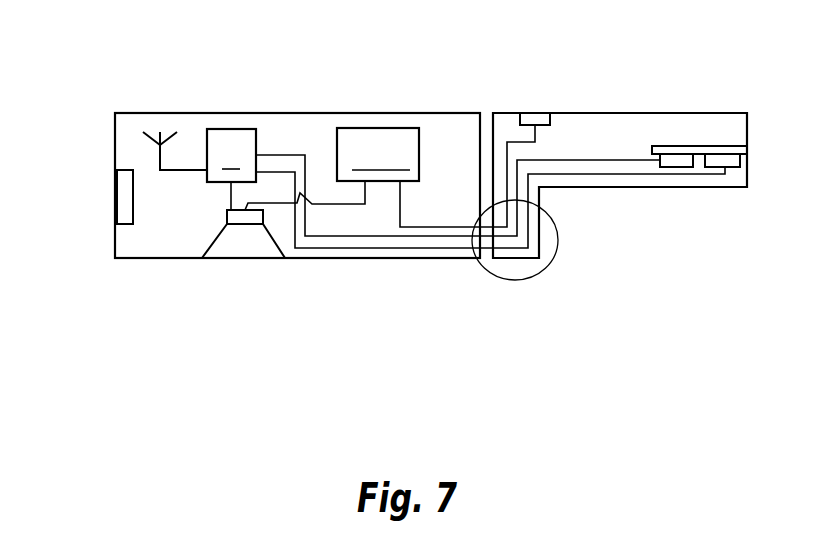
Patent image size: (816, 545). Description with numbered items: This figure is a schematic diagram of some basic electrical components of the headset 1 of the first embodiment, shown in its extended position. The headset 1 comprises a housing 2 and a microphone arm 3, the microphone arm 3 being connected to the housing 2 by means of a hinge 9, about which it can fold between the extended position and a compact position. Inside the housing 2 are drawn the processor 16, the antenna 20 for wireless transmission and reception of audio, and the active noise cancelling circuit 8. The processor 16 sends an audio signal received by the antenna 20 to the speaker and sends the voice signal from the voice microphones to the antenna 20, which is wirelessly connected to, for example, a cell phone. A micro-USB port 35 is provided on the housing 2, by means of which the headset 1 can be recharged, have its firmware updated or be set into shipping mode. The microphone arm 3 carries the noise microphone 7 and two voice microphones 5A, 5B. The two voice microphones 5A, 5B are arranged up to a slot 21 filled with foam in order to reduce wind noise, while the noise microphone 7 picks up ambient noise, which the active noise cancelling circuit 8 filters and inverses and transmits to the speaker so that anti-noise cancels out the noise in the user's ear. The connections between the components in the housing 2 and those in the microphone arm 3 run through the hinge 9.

The headset 1 is at (105, 65).
The housing 2 is at (155, 232).
The microphone arm 3 is at (630, 140).
The micro-USB port 35 is at (113, 193).
The antenna 20 is at (163, 160).
The processor 16 is at (247, 129).
The active noise cancelling circuit 8 is at (380, 128).
The noise microphone 7 is at (250, 240).
The slot 21 is at (698, 146).
The voice microphone 5A is at (672, 175).
The voice microphone 5B is at (745, 164).
The hinge 9 is at (525, 282).